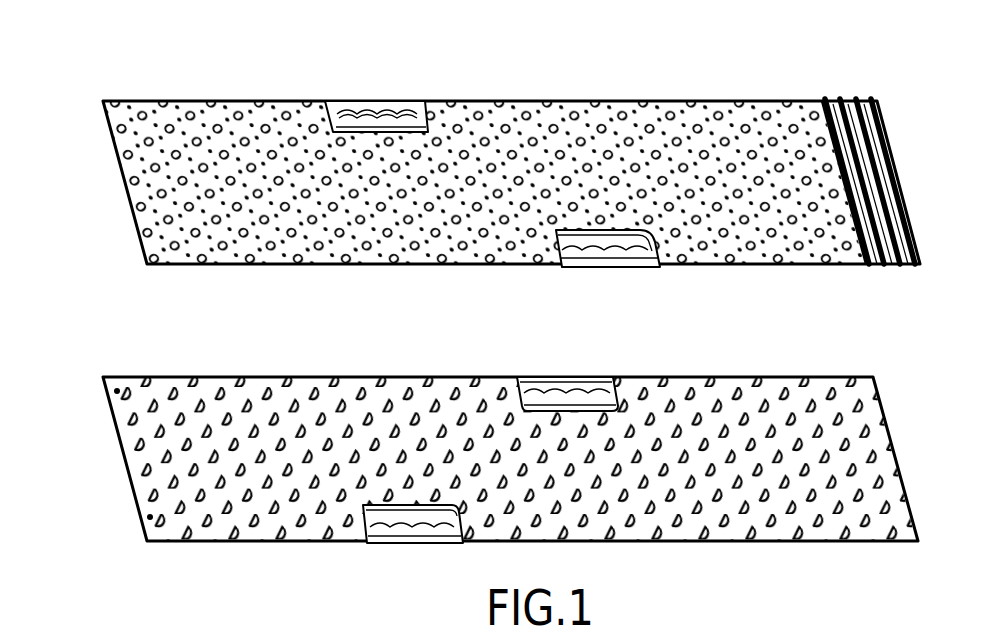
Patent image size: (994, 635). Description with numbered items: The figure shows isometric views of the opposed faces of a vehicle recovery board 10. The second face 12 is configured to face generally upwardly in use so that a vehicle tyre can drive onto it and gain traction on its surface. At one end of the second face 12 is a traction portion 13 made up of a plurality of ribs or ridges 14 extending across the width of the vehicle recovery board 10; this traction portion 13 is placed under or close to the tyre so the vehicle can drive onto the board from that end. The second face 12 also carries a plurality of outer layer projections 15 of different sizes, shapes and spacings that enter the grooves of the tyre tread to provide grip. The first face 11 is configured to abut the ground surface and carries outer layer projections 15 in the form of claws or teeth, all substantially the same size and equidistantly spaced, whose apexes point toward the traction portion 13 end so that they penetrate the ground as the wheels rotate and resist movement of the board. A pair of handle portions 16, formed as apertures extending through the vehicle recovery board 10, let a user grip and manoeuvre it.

The vehicle recovery board 10 is at (108, 226).
The first face 11 is at (127, 458).
The second face 12 is at (518, 108).
The traction portion 13 is at (882, 116).
The ribs or ridges 14 is at (878, 200).
The outer layer projections 15 is at (213, 163).
The handle portions 16 is at (372, 110).